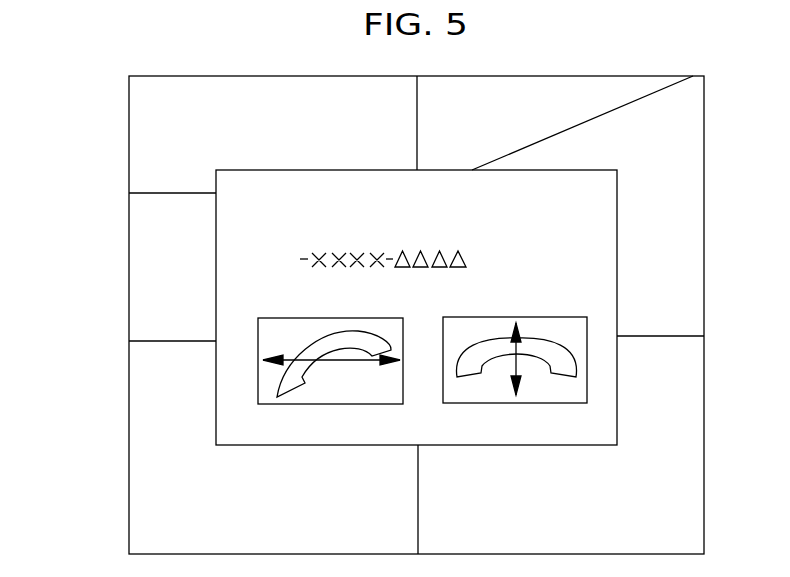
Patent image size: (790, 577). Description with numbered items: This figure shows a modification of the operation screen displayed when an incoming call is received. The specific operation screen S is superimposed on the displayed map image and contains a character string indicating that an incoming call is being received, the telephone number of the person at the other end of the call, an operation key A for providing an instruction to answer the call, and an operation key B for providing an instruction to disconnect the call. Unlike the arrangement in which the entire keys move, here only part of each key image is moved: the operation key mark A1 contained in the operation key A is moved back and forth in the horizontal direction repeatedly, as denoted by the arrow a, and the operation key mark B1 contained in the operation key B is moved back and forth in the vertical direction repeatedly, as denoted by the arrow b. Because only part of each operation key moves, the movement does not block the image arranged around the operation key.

The specific operation screen S is at (216, 309).
The operation key A is at (258, 380).
The operation key mark A1 is at (295, 393).
The arrow a is at (333, 362).
The operation key B is at (587, 377).
The operation key mark B1 is at (472, 377).
The arrow b is at (527, 367).